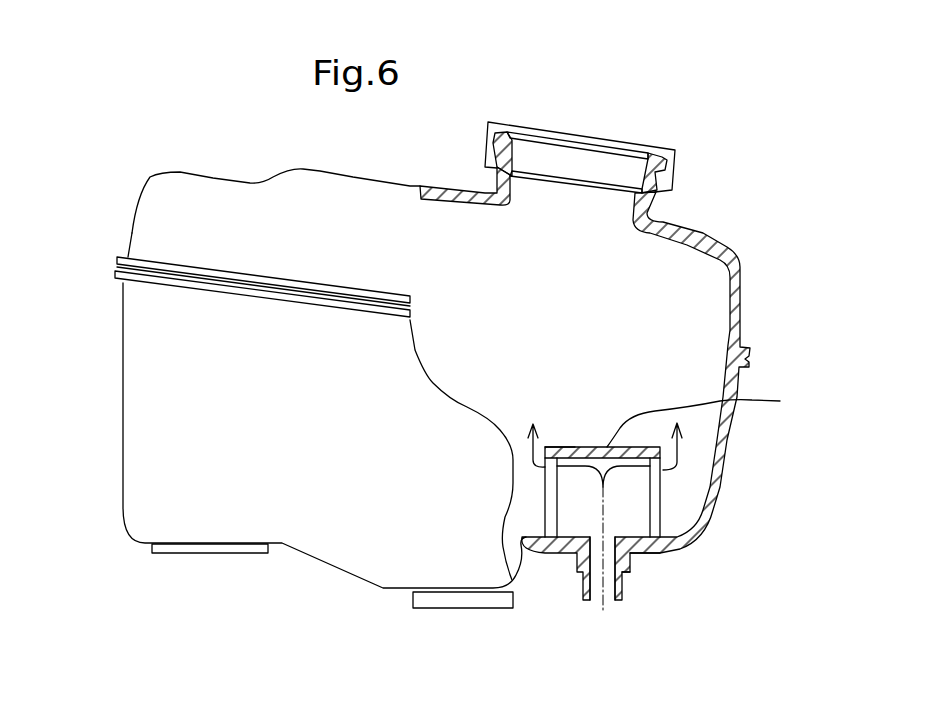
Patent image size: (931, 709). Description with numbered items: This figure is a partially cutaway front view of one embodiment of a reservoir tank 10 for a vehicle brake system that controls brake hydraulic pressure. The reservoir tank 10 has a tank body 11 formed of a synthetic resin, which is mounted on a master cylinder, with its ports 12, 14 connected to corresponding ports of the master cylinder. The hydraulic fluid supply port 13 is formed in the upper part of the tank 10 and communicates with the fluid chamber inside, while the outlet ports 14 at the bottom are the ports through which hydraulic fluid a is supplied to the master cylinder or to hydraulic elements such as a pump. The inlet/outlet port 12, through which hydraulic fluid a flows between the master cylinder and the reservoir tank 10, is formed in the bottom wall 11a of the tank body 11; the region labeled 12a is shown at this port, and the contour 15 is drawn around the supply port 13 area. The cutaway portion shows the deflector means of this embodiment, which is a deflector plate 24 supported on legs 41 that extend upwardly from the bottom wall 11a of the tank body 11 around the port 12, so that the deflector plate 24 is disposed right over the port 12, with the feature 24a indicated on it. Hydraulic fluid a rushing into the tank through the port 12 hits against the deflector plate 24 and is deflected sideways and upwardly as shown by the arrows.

The reservoir tank 10 is at (110, 396).
The tank body 11 is at (737, 257).
The bottom wall 11a is at (658, 554).
The inlet/outlet port 12 is at (607, 592).
The port flange 12a is at (637, 555).
The hydraulic fluid supply port 13 is at (571, 158).
The outlet port 14 is at (162, 549).
The cap outer contour 15 is at (670, 185).
The deflector plate 24 is at (709, 417).
The partition opening 24a is at (576, 447).
The legs 41 is at (657, 521).
The hydraulic fluid a is at (660, 463).